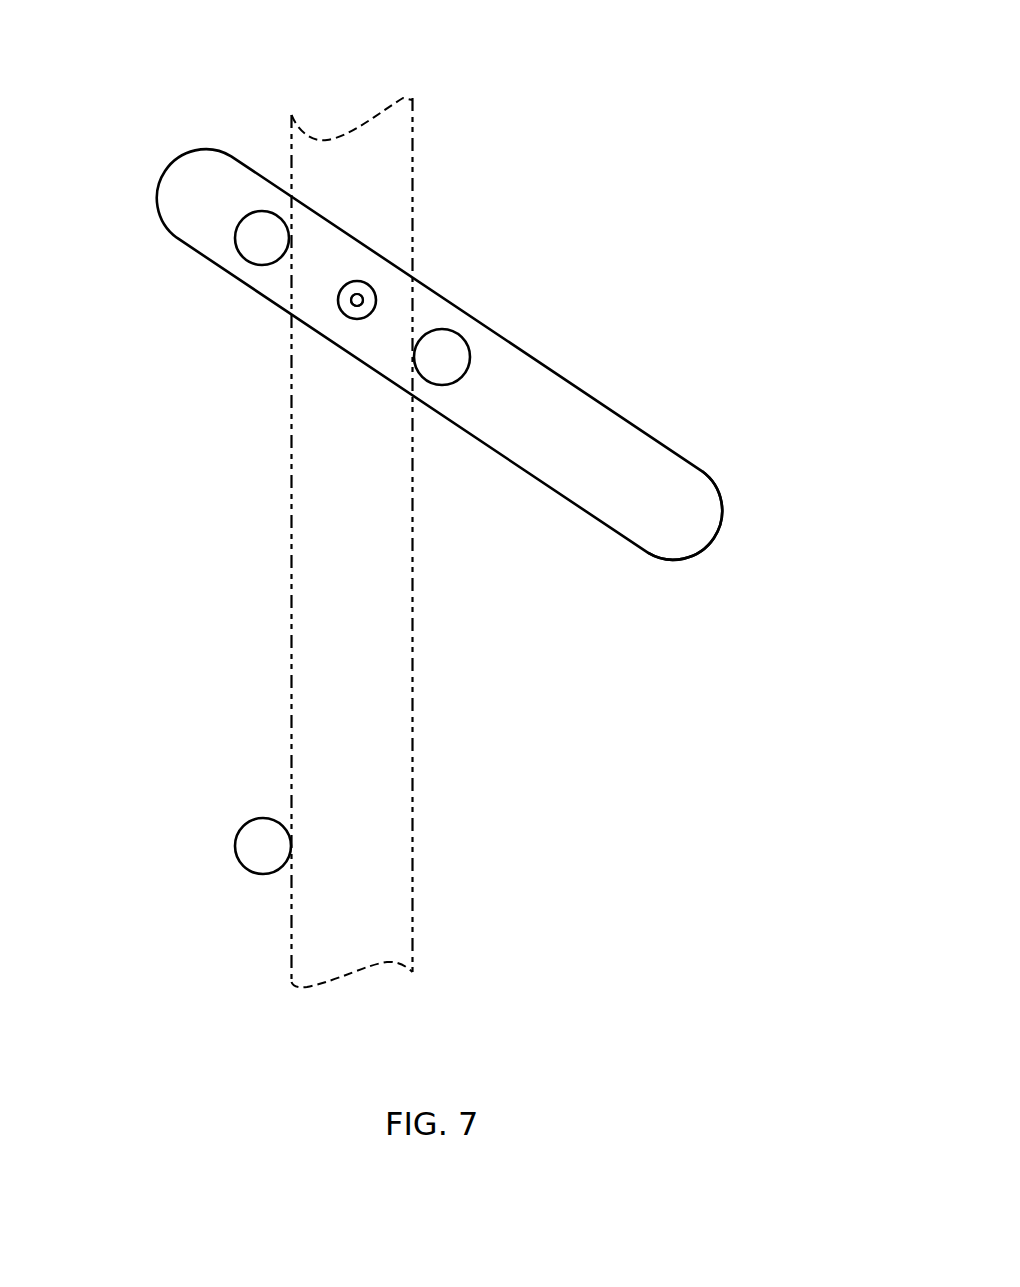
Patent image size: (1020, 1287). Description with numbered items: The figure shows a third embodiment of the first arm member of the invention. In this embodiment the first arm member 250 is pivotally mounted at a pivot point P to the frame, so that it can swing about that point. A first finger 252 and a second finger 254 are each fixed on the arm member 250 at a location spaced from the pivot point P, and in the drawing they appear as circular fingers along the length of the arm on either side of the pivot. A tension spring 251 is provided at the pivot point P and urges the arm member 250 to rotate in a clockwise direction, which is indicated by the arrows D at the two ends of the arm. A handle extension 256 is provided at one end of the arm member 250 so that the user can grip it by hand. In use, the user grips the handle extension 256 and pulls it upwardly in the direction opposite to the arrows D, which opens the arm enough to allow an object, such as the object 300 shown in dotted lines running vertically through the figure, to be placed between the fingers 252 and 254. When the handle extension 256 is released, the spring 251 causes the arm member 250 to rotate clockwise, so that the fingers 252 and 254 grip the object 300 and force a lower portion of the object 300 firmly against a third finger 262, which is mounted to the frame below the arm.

The first arm member 250 is at (668, 433).
The tension spring 251 is at (338, 300).
The first finger 252 is at (445, 362).
The second finger 254 is at (246, 247).
The handle extension 256 is at (725, 514).
The third finger 262 is at (245, 826).
The object 300 is at (412, 843).
The pivot point P is at (376, 294).
The arrows indicating clockwise rotation direction D is at (313, 55).